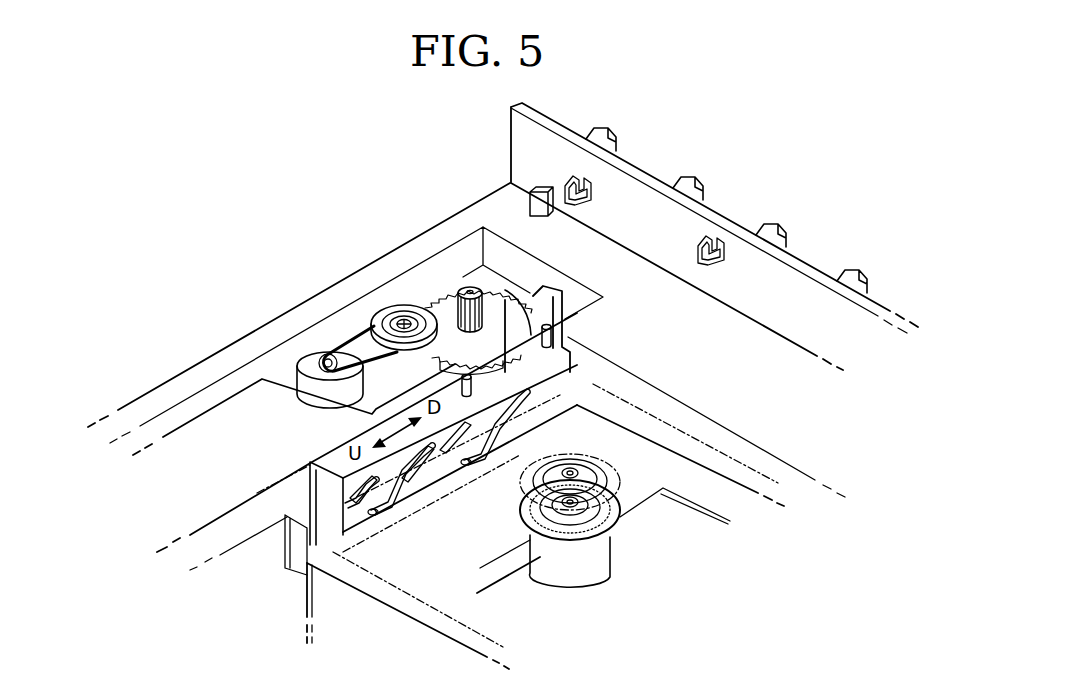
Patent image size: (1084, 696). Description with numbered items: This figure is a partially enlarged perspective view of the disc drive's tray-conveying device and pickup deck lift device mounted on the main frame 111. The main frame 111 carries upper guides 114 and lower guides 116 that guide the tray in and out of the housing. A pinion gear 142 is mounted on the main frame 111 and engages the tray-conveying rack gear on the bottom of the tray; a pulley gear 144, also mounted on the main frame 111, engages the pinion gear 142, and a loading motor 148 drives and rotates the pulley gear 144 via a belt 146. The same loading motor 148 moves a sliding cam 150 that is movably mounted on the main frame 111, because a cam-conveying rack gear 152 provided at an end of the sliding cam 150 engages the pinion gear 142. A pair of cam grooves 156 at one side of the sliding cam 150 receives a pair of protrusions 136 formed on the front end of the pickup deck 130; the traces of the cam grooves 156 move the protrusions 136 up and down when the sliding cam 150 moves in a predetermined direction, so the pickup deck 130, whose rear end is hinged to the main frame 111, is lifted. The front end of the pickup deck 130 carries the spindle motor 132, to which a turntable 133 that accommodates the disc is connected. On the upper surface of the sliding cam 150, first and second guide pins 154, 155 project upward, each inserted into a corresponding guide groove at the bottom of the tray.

The main frame 111 is at (343, 283).
The upper guides 114 is at (590, 170).
The lower guides 116 is at (539, 190).
The pickup deck 130 is at (397, 603).
The spindle motor 132 is at (603, 558).
The turntable 133 is at (623, 517).
The protrusions 136 is at (375, 515).
The pinion gear 142 is at (463, 287).
The pulley gear 144 is at (396, 312).
The belt 146 is at (343, 340).
The loading motor 148 is at (307, 367).
The sliding cam 150 is at (550, 302).
The cam-conveying rack gear 152 is at (504, 285).
The first guide pin 154 is at (553, 333).
The second guide pin 155 is at (480, 380).
The cam grooves 156 is at (507, 413).